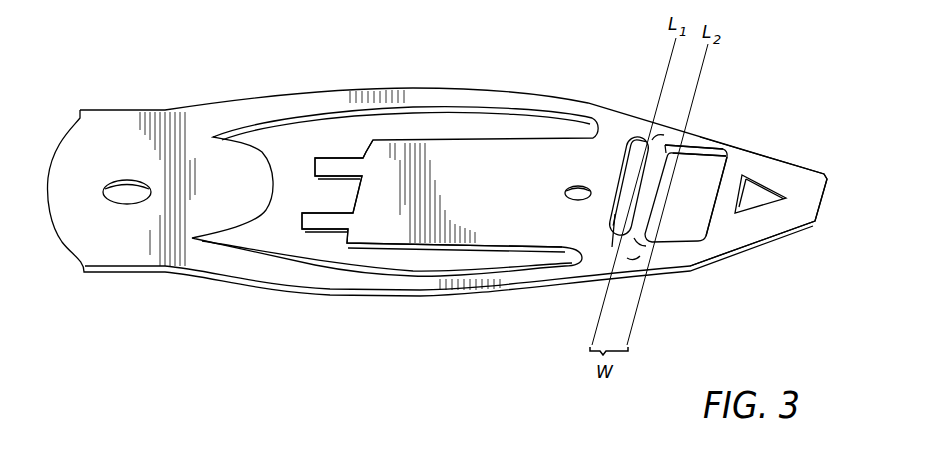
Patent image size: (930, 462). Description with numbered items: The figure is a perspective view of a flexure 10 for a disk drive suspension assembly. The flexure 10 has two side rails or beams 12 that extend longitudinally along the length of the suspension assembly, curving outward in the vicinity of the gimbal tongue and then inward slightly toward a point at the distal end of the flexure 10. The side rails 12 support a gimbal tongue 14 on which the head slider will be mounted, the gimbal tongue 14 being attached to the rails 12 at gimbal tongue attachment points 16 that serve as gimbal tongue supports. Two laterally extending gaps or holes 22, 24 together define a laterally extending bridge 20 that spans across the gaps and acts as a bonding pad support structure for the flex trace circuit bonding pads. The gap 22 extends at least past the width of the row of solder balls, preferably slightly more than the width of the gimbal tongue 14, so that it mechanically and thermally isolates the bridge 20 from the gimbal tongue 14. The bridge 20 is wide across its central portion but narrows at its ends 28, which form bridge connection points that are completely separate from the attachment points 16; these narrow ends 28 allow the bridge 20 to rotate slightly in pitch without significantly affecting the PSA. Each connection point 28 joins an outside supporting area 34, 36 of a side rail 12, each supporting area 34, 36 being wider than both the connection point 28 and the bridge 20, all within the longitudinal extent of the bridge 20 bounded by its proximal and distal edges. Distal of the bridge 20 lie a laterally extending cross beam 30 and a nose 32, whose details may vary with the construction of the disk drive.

The flexure 10 is at (143, 98).
The side rails 12 is at (440, 96).
The gimbal tongue 14 is at (478, 198).
The gimbal tongue attachment points 16 is at (628, 122).
The bridge 20 is at (653, 200).
The gap 22 is at (610, 237).
The gap 24 is at (704, 206).
The bridge ends 28 is at (662, 142).
The cross beam 30 is at (727, 197).
The nose 32 is at (792, 176).
The supporting area 34 is at (660, 134).
The supporting area 36 is at (638, 244).